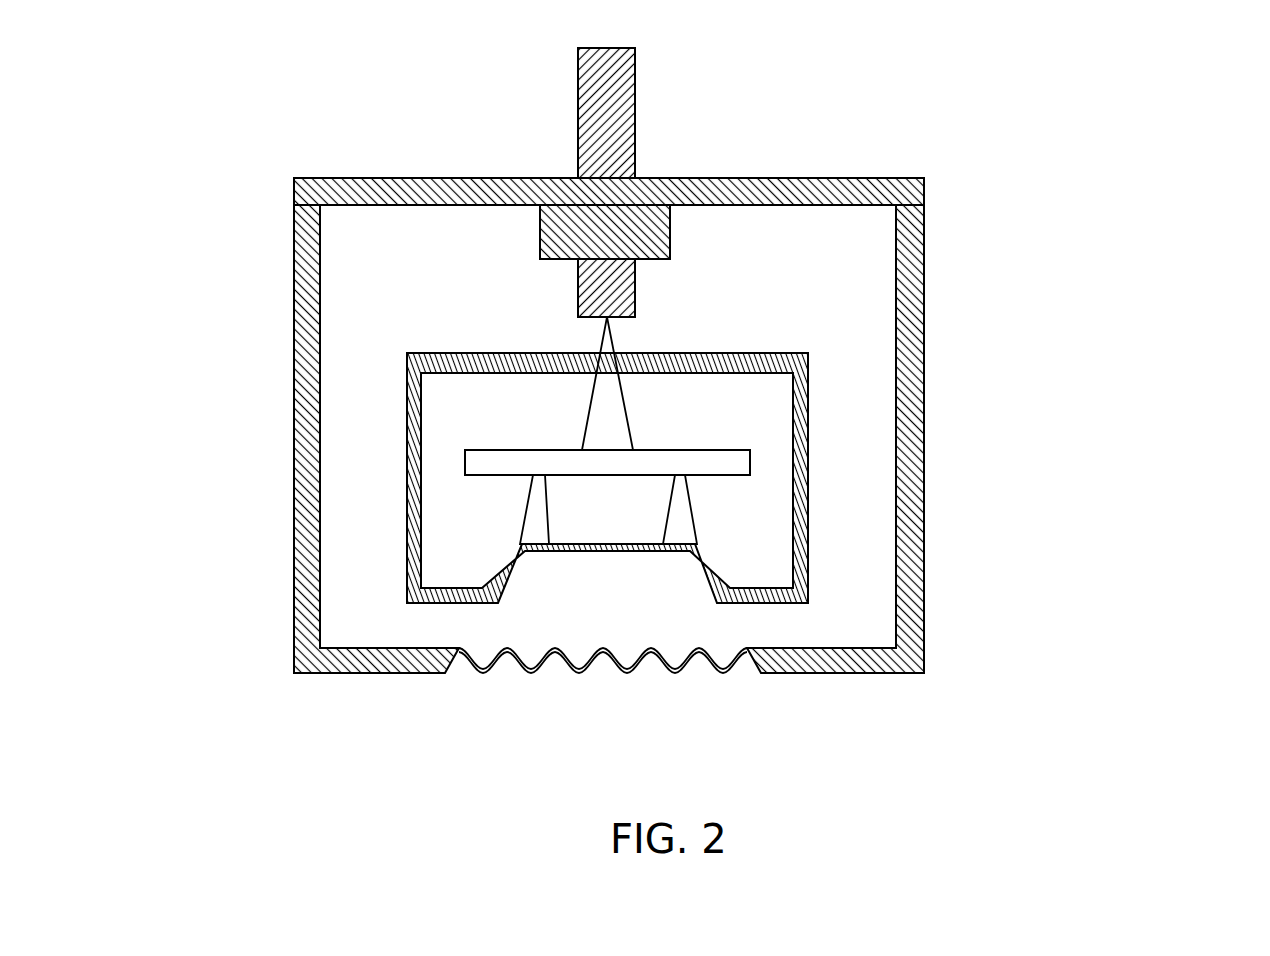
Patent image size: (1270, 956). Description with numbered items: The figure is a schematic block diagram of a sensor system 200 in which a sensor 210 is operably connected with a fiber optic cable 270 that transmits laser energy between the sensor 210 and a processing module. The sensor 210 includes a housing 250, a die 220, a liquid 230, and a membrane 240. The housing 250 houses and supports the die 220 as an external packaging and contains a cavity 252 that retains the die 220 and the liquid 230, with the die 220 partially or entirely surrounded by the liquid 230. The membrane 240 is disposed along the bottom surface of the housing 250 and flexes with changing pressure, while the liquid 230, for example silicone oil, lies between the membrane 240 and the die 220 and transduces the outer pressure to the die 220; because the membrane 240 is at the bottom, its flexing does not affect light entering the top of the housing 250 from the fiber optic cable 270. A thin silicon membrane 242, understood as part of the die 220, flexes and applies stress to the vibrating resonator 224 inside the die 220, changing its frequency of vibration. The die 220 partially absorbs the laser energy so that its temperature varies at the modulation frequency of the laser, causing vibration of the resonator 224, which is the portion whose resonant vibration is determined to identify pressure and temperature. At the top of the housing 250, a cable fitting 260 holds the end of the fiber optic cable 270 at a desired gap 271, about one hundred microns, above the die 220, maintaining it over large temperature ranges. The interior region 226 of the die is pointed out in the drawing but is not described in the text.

The sensor system 200 is at (1123, 107).
The sensor 210 is at (294, 243).
The die 220 is at (812, 528).
The resonator 224 is at (736, 463).
The enclosure interior space 226 is at (768, 567).
The liquid 230 is at (853, 312).
The membrane 240 is at (589, 677).
The thin silicon membrane 242 is at (573, 553).
The housing 250 is at (833, 178).
The cavity 252 is at (858, 257).
The cable fitting 260 is at (672, 231).
The fiber optic cable 270 is at (636, 77).
The gap 271 is at (563, 317).